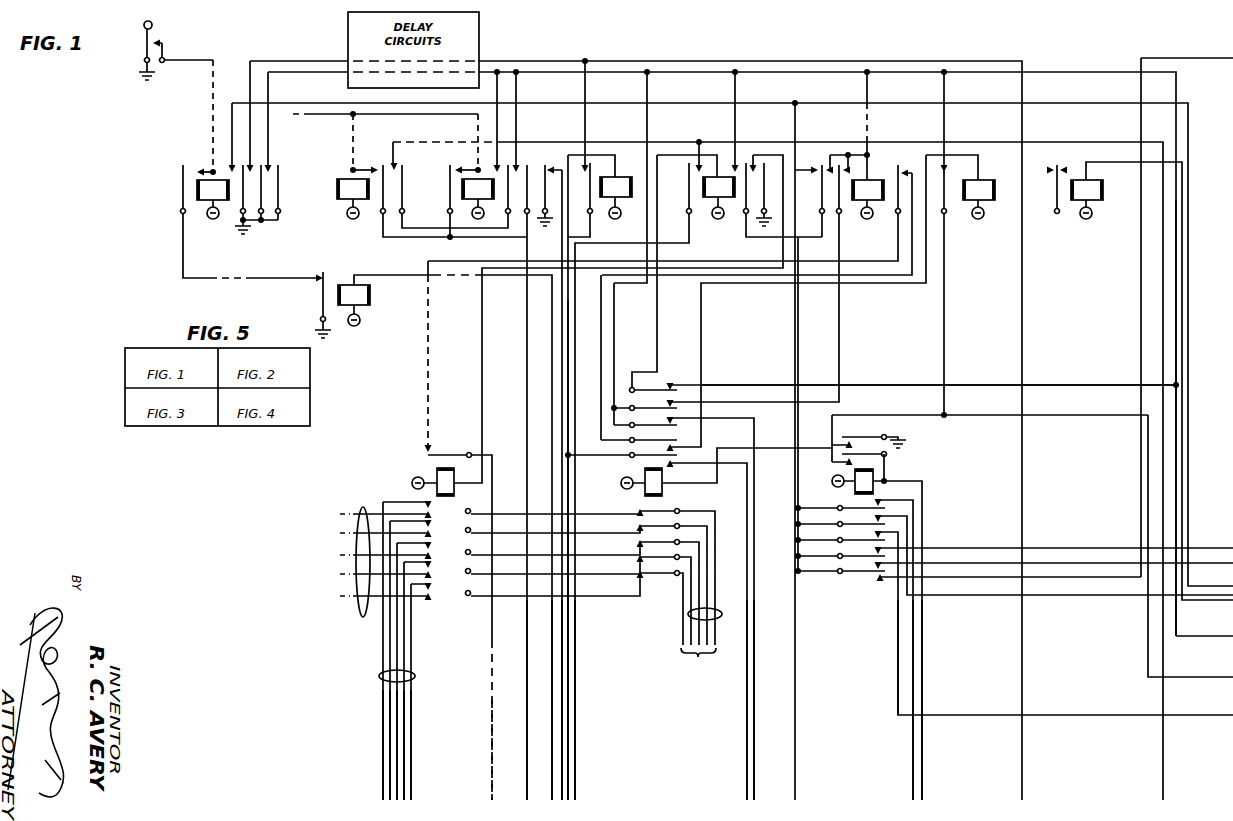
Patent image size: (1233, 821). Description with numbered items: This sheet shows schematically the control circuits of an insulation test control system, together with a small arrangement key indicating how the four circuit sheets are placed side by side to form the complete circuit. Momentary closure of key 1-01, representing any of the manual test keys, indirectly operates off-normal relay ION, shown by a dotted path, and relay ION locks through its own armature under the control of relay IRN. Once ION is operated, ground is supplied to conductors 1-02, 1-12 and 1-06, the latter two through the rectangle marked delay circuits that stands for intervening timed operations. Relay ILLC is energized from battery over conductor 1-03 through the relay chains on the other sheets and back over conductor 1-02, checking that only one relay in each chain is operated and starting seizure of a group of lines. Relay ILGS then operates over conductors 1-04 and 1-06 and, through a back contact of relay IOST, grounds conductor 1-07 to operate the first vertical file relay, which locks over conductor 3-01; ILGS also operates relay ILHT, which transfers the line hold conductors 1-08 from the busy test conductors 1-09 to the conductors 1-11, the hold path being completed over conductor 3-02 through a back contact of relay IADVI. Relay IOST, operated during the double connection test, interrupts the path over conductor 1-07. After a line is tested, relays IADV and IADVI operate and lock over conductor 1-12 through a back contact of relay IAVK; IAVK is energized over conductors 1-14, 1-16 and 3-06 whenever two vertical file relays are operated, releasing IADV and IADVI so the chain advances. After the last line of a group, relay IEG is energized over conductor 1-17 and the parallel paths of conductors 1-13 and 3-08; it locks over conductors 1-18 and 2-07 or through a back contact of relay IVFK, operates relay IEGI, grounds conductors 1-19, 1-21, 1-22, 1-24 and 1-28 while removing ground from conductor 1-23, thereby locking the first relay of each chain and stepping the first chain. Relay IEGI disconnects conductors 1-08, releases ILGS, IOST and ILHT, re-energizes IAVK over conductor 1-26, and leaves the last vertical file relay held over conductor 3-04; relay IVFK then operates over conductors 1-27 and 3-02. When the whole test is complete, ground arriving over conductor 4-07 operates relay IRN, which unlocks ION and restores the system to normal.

The key 1-01 is at (161, 32).
The conductor 1-12 is at (540, 61).
The conductor 1-06 is at (1046, 75).
The conductor 1-02 is at (764, 107).
The conductor 1-03 is at (1176, 289).
The conductor 1-04 is at (1058, 383).
The conductor 1-07 is at (795, 613).
The line hold conductors 1-08 is at (688, 614).
The line busy test conductors 1-09 is at (355, 573).
The conductors 1-11 is at (379, 679).
The conductor 1-13 is at (575, 670).
The conductor 1-14 is at (568, 320).
The conductor 1-16 is at (575, 643).
The conductor 1-17 is at (916, 667).
The conductor 1-18 is at (1063, 418).
The conductor 1-19 is at (916, 633).
The conductor 1-21 is at (1068, 596).
The conductor 1-22 is at (1092, 546).
The conductor 1-23 is at (1141, 267).
The conductor 1-24 is at (1002, 546).
The conductor 1-26 is at (747, 698).
The conductor 1-27 is at (492, 753).
The conductor 1-28 is at (898, 643).
The conductor 2-07 is at (1180, 640).
The conductor 3-01 is at (753, 723).
The conductor 3-02 is at (562, 698).
The conductor 3-04 is at (527, 722).
The conductor 3-06 is at (1023, 487).
The conductor 3-08 is at (1163, 316).
The conductor 4-07 is at (553, 723).
The off-normal relay ION is at (214, 178).
The advance relay IADV is at (348, 178).
The advance relay IADVI is at (469, 178).
The advance check relay IAVK is at (600, 430).
The line group seizure relay ILGS is at (712, 201).
The double connection test relay IOST is at (870, 178).
The vertical file check relay IVFK is at (834, 259).
The line link connector relay ILLC is at (1080, 201).
The restore relay IRN is at (374, 298).
The line hold transfer relay ILHT is at (433, 476).
The end of group relay IEGI is at (665, 491).
The end of group relay IEG is at (853, 490).